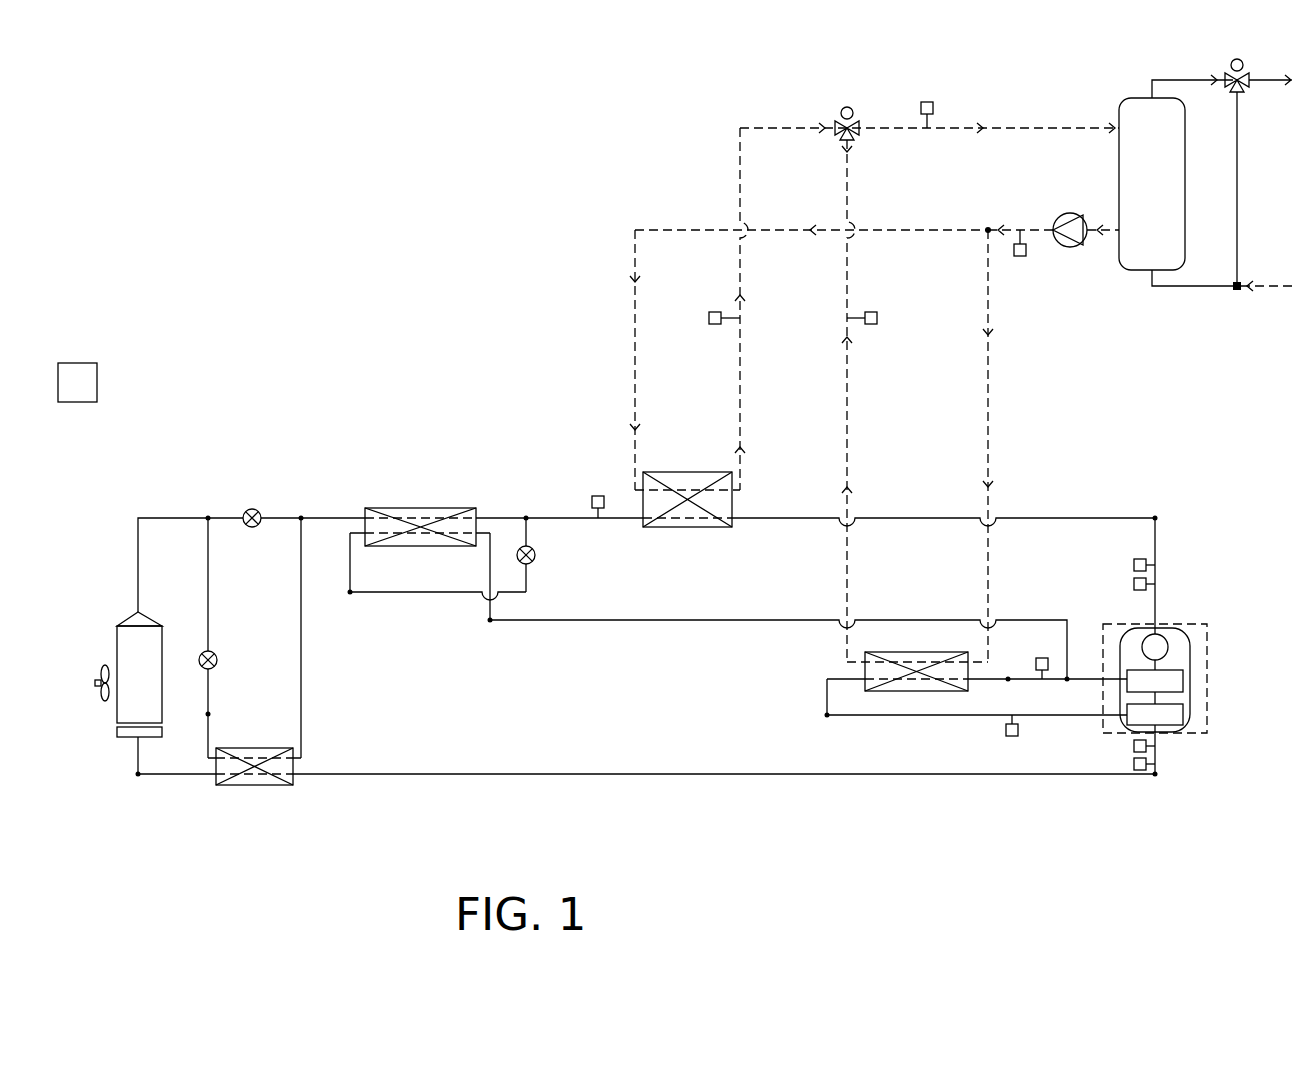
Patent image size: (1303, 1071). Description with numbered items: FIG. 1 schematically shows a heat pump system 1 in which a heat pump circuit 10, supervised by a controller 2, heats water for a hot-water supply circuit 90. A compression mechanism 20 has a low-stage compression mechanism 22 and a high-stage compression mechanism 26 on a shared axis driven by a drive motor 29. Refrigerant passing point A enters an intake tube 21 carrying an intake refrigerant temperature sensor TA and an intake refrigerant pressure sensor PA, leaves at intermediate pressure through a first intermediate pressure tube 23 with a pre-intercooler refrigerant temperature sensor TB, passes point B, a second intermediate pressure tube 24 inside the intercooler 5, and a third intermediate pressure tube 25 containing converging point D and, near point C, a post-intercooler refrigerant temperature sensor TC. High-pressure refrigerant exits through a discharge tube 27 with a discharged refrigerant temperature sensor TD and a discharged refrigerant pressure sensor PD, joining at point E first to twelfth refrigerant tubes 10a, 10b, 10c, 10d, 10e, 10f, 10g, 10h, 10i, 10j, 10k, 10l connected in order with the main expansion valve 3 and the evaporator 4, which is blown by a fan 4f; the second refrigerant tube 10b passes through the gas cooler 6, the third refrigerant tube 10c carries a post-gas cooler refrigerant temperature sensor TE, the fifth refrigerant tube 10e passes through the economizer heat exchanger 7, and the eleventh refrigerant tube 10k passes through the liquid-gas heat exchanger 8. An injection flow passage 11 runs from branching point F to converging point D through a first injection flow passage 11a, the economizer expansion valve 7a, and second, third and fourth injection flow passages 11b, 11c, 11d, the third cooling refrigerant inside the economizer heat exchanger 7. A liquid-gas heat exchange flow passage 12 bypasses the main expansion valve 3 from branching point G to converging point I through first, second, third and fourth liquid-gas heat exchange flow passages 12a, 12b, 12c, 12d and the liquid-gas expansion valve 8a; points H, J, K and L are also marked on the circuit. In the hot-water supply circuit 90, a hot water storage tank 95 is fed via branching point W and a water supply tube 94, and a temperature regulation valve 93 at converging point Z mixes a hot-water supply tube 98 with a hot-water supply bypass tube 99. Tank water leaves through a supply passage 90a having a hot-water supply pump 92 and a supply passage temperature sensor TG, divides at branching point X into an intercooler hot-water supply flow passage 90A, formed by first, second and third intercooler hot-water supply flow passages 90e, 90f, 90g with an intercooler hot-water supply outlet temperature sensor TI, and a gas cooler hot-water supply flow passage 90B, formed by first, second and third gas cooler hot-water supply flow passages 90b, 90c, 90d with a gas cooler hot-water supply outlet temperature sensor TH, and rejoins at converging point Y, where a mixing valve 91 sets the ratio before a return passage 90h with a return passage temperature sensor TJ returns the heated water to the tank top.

The heat pump system 1 is at (303, 262).
The controller 2 is at (97, 380).
The main expansion valve 3 is at (252, 508).
The evaporator 4 is at (115, 643).
The fan 4f is at (95, 684).
The intercooler 5 is at (905, 652).
The gas cooler 6 is at (673, 530).
The economizer heat exchanger 7 is at (441, 506).
The economizer expansion valve 7a is at (534, 565).
The liquid-gas heat exchanger 8 is at (240, 748).
The liquid-gas expansion valve 8a is at (203, 652).
The heat pump circuit 10 is at (128, 500).
The first refrigerant tube 10a is at (1075, 514).
The second refrigerant tube 10b is at (713, 528).
The third refrigerant tube 10c is at (561, 514).
The fourth refrigerant tube 10d is at (499, 514).
The fifth refrigerant tube 10e is at (393, 512).
The sixth refrigerant tube 10f is at (341, 514).
The seventh refrigerant tube 10g is at (276, 512).
The eighth refrigerant tube 10h is at (208, 512).
The ninth refrigerant tube 10i is at (130, 570).
The tenth refrigerant tube 10j is at (135, 752).
The eleventh refrigerant tube 10k is at (255, 787).
The twelfth refrigerant tube 10l is at (725, 777).
The injection flow passage 11 is at (450, 650).
The first injection flow passage 11a is at (530, 530).
The second injection flow passage 11b is at (416, 595).
The third injection flow passage 11c is at (398, 548).
The fourth injection flow passage 11d is at (663, 623).
The liquid-gas heat exchange flow passage 12 is at (306, 700).
The first liquid-gas heat exchange flow passage 12a is at (300, 575).
The second liquid-gas heat exchange flow passage 12b is at (263, 750).
The third liquid-gas heat exchange flow passage 12c is at (210, 683).
The fourth liquid-gas heat exchange flow passage 12d is at (210, 605).
The compression mechanism 20 is at (1210, 623).
The intake tube 21 is at (1157, 760).
The low-stage compression mechanism 22 is at (1184, 715).
The first intermediate pressure tube 23 is at (978, 717).
The second intermediate pressure tube 24 is at (918, 683).
The third intermediate pressure tube 25 is at (990, 682).
The high-stage compression mechanism 26 is at (1184, 680).
The discharge tube 27 is at (1160, 620).
The drive motor 29 is at (1170, 647).
The hot-water supply circuit 90 is at (608, 155).
The intercooler hot-water supply flow passage 90A is at (852, 372).
The gas cooler hot-water supply flow passage 90B is at (640, 372).
The supply passage 90a is at (1038, 228).
The first gas cooler hot-water supply flow passage 90b is at (637, 300).
The second gas cooler hot-water supply flow passage 90c is at (690, 485).
The third gas cooler hot-water supply flow passage 90d is at (738, 418).
The first intercooler hot-water supply flow passage 90e is at (987, 423).
The second intercooler hot-water supply flow passage 90f is at (939, 660).
The third intercooler hot-water supply flow passage 90g is at (849, 457).
The return passage 90h is at (1037, 126).
The mixing valve 91 is at (847, 105).
The hot-water supply pump 92 is at (1076, 213).
The temperature regulation valve 93 is at (1226, 60).
The water supply tube 94 is at (1200, 285).
The hot water storage tank 95 is at (1126, 96).
The hot-water supply tube 98 is at (1205, 82).
The hot-water supply bypass tube 99 is at (1240, 172).
The intake refrigerant temperature sensor TA is at (1134, 764).
The pre-intercooler refrigerant temperature sensor TB is at (1018, 730).
The post-intercooler refrigerant temperature sensor TC is at (1041, 658).
The discharged refrigerant temperature sensor TD is at (1134, 584).
The post-gas cooler refrigerant temperature sensor TE is at (598, 495).
The supply passage temperature sensor TG is at (1020, 258).
The gas cooler hot-water supply outlet temperature sensor TH is at (715, 310).
The intercooler hot-water supply outlet temperature sensor TI is at (871, 310).
The return passage temperature sensor TJ is at (927, 100).
The intake refrigerant pressure sensor PA is at (1134, 746).
The discharged refrigerant pressure sensor PD is at (1134, 565).
The point A is at (1151, 791).
The point B is at (815, 715).
The point C is at (1006, 667).
The converging point D is at (1064, 693).
The point E is at (1151, 505).
The branching point F is at (522, 505).
The branching point G is at (298, 505).
The point H is at (198, 715).
The converging point I is at (207, 505).
The point J is at (127, 777).
The point K is at (341, 567).
The point L is at (479, 581).
The branching point W is at (1234, 298).
The branching point X is at (986, 218).
The converging point Y is at (827, 108).
The converging point Z is at (1256, 60).